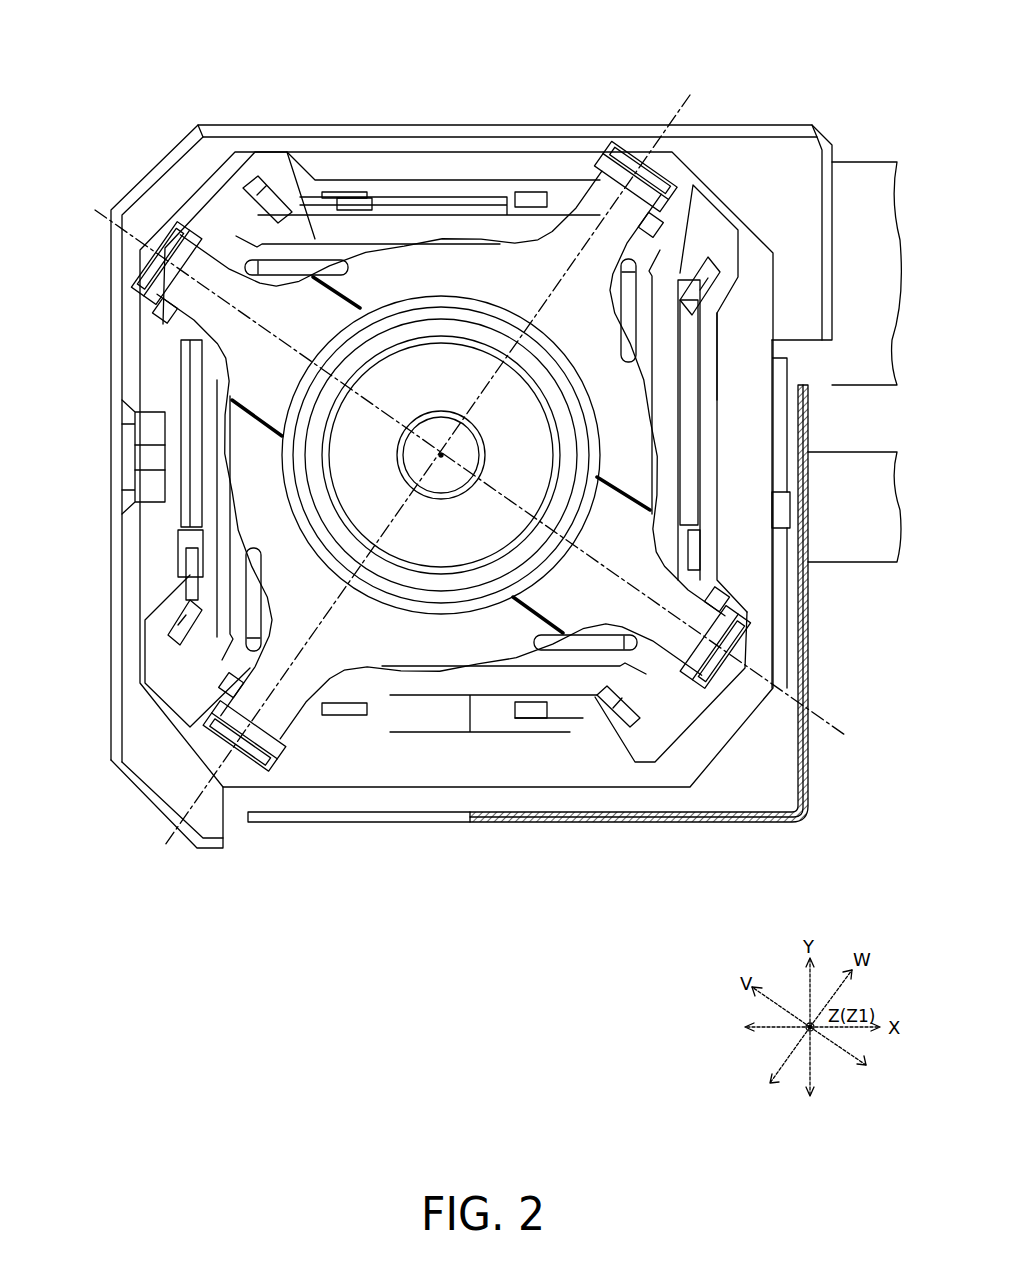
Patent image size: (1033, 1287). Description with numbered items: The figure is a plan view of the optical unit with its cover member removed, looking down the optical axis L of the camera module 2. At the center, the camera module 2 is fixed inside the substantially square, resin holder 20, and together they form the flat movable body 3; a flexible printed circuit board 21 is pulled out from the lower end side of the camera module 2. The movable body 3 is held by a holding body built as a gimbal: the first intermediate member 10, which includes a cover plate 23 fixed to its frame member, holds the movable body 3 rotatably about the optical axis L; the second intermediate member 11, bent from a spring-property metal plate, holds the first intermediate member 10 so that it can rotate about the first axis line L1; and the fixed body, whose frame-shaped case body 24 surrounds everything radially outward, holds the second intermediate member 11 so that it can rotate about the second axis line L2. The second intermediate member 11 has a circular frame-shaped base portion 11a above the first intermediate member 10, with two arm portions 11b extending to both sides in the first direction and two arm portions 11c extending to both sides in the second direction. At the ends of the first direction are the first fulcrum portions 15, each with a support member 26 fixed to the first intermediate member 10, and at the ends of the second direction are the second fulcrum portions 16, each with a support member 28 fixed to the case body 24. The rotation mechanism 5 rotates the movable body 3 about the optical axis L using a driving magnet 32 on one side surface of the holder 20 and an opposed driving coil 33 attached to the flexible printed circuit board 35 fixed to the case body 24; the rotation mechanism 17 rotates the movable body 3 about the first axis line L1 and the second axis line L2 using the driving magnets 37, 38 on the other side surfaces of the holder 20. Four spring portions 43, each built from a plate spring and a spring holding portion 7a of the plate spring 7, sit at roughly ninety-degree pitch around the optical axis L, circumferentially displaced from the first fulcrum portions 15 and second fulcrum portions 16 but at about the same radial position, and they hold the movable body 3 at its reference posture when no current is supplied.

The camera module 2 is at (441, 302).
The movable body 3 is at (429, 142).
The rotation mechanism 5 is at (120, 450).
The plate spring 7 is at (450, 462).
The spring holding portion 7a is at (600, 722).
The first intermediate member 10 is at (462, 487).
The second intermediate member 11 is at (438, 409).
The base portion 11a is at (406, 232).
The arm portion 11b is at (142, 300).
The arm portion 11c is at (652, 214).
The first fulcrum portion 15 is at (202, 236).
The second fulcrum portion 16 is at (682, 170).
The rotation mechanism 17 is at (420, 84).
The holder 20 is at (542, 182).
The flexible printed circuit board 21 is at (876, 162).
The cover plate 23 is at (700, 326).
The case body 24 is at (786, 125).
The support member 26 is at (170, 250).
The support member 28 is at (612, 150).
The driving magnet 32 is at (184, 402).
The driving coil 33 is at (135, 478).
The flexible printed circuit board 35 is at (870, 562).
The driving magnet 37 is at (702, 452).
The driving magnet 38 is at (473, 190).
The spring portion 43 is at (250, 160).
The optical axis L is at (441, 452).
The first axis line L1 is at (845, 735).
The second axis line L2 is at (690, 95).